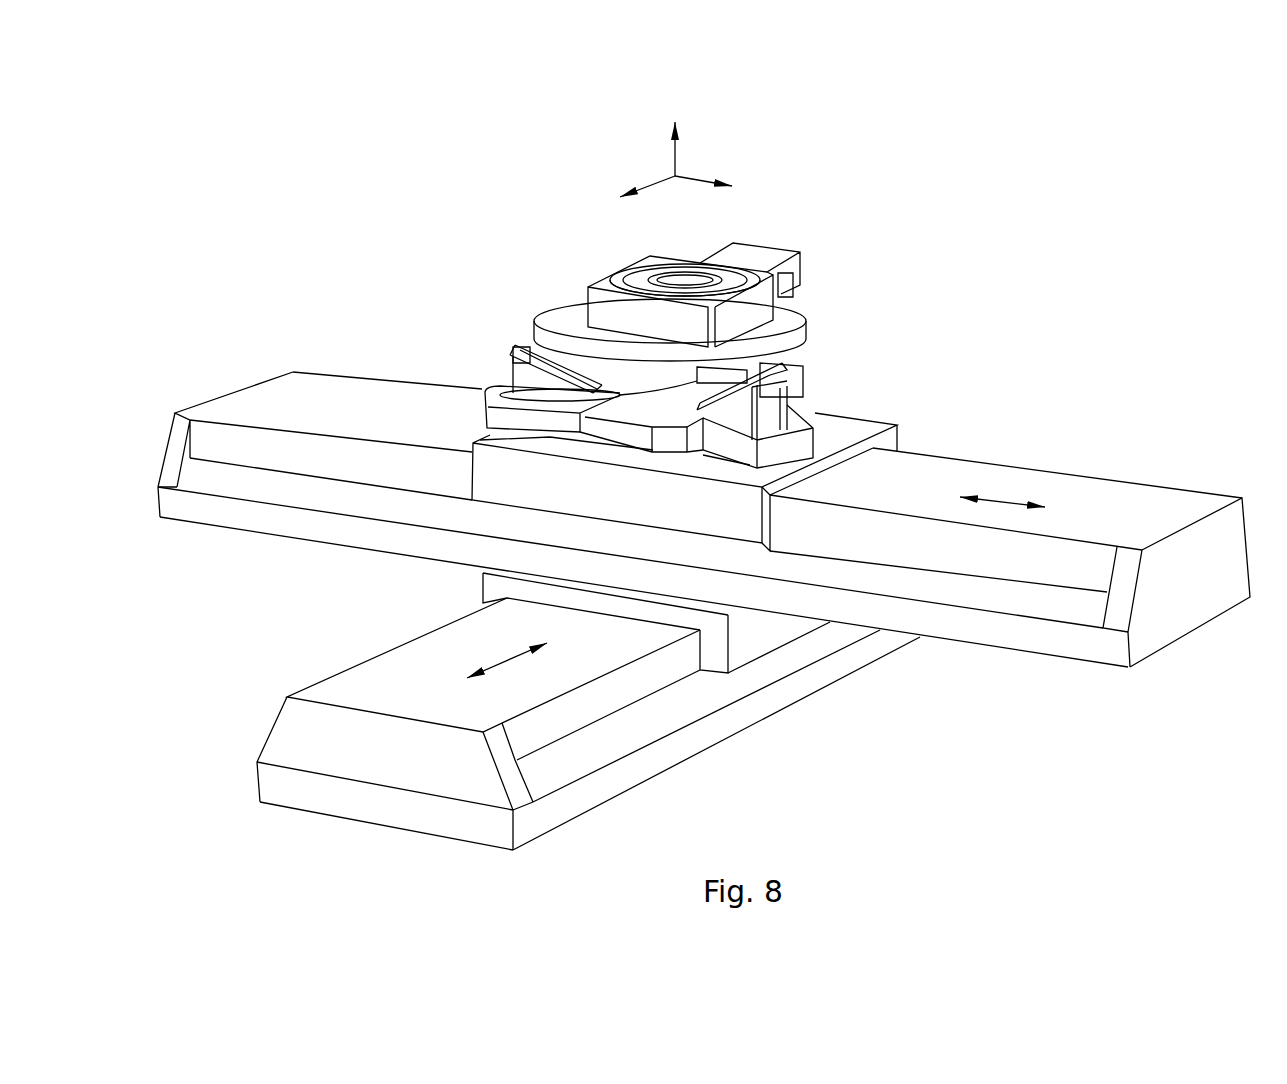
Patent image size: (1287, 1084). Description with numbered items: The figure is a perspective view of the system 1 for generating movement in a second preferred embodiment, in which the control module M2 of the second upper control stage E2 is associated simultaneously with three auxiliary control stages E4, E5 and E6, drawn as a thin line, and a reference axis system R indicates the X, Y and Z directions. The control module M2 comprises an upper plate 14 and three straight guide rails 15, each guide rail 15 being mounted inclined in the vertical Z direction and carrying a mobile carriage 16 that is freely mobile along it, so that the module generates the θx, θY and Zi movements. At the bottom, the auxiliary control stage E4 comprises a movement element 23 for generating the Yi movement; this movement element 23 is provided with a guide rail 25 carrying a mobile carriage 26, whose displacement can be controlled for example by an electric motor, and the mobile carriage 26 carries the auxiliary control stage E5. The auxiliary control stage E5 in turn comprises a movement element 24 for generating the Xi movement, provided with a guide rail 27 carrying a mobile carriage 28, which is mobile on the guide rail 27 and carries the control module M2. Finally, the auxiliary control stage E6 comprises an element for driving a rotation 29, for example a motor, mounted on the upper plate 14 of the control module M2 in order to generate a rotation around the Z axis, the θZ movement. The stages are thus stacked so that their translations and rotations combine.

The system 1 is at (430, 268).
The upper plate 14 is at (795, 347).
The straight guide rail 15 is at (495, 365).
The mobile carriage 16 is at (525, 338).
The movement element 23 is at (790, 740).
The movement element 24 is at (968, 412).
The guide rail 25 is at (572, 713).
The mobile carriage 26 is at (718, 648).
The guide rail 27 is at (993, 462).
The mobile carriage 28 is at (903, 440).
The element for driving a rotation 29 is at (762, 300).
The coordinate system R is at (646, 152).
The second upper control stage E2 is at (850, 318).
The auxiliary control stage E4 is at (798, 773).
The auxiliary control stage E5 is at (1090, 398).
The auxiliary control stage E6 is at (597, 250).
The control module M2 is at (838, 383).
The Xi movement Xi is at (1003, 500).
The Yi movement Yi is at (517, 658).